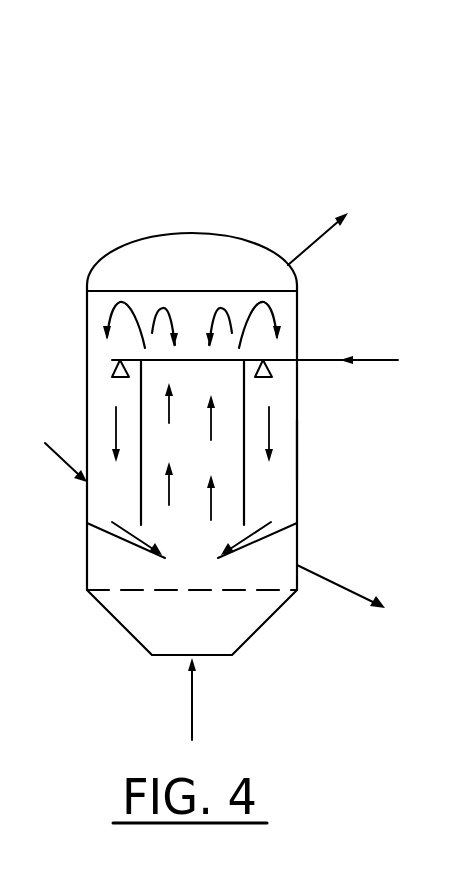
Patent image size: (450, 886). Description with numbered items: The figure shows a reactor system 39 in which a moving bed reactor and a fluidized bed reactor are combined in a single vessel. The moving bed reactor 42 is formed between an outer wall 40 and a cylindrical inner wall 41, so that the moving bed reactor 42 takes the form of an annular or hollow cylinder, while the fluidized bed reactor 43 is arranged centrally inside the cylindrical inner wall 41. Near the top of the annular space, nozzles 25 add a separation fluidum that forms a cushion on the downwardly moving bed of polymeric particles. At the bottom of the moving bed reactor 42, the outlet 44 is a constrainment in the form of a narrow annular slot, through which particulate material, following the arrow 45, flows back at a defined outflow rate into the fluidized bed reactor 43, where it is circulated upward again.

The reactor system 39 is at (350, 147).
The outer wall 40 is at (298, 455).
The cylindrical inner wall 41 is at (244, 397).
The moving bed reactor 42 is at (278, 489).
The fluidized bed reactor 43 is at (183, 433).
The nozzles 25 is at (114, 369).
The outlet 44 is at (137, 553).
The arrow 45 is at (255, 532).